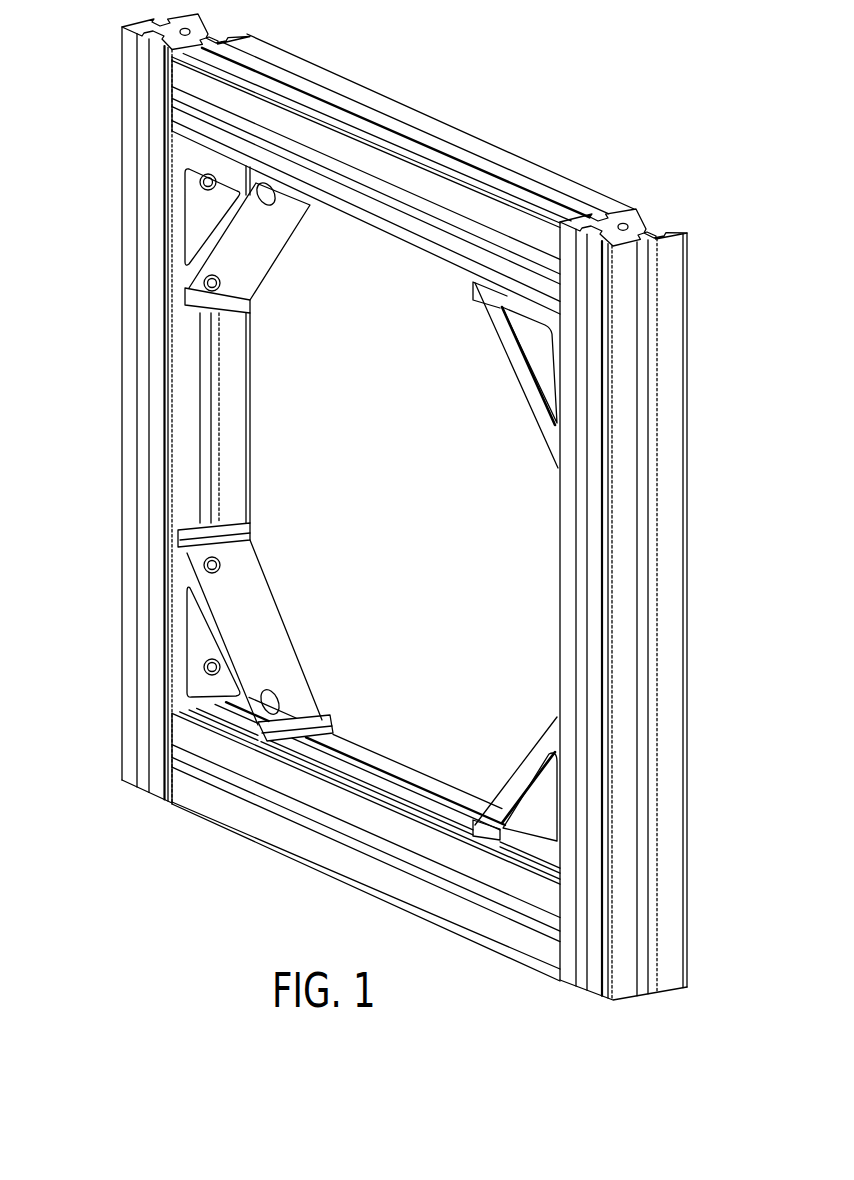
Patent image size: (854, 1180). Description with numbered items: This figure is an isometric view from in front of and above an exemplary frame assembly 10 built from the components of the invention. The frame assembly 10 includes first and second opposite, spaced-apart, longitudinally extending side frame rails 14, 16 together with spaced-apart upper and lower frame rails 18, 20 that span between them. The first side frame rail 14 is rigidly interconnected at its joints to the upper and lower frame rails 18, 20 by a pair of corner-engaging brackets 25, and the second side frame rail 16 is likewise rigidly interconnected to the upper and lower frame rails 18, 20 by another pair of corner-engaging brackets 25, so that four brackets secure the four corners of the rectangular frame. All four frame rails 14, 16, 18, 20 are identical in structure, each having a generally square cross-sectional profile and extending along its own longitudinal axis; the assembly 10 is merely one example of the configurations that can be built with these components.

The frame assembly 10 is at (390, 507).
The first side frame rail 14 is at (243, 423).
The second side frame rail 16 is at (685, 587).
The upper frame rail 18 is at (418, 117).
The lower frame rail 20 is at (402, 763).
The corner-engaging bracket 25 is at (292, 226).